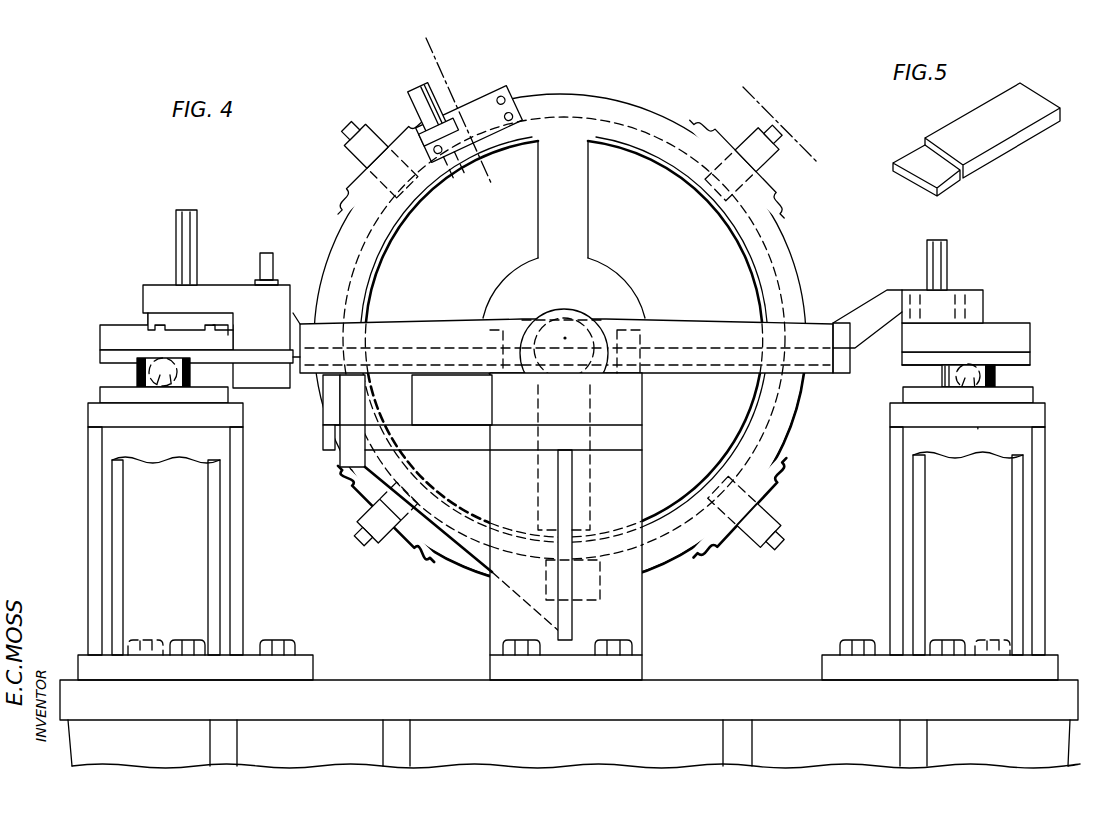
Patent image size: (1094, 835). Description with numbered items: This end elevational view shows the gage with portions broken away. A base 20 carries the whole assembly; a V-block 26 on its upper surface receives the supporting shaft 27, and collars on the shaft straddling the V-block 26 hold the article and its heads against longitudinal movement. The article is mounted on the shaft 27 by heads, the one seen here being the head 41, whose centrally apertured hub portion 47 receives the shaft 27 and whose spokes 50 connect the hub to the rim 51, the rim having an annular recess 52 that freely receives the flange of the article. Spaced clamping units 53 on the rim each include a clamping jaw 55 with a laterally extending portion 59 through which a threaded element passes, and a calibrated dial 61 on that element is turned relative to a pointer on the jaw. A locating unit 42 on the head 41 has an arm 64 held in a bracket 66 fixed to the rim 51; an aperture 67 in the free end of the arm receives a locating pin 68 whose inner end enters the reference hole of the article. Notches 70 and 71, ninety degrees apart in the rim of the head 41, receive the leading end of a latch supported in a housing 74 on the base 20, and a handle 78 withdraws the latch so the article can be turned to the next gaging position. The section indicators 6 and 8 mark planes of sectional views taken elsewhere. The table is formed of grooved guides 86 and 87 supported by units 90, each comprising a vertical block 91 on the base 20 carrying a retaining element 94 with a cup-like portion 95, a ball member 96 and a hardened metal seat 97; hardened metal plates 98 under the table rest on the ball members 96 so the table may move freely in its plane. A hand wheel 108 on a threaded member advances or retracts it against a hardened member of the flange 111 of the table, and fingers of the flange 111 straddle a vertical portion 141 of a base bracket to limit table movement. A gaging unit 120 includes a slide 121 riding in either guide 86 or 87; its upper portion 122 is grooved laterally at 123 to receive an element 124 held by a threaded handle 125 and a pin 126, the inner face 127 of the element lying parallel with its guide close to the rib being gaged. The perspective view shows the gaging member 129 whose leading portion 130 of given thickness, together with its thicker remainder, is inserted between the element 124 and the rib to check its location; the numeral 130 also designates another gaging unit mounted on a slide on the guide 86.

In FIG. 4, the section line 6- 6 is at (424, 41).
In FIG. 4, the section line 8- 8 is at (748, 92).
In FIG. 4, the base 20 is at (820, 758).
In FIG. 4, the V-block 26 is at (642, 398).
In FIG. 4, the supporting shaft 27 is at (568, 312).
In FIG. 4, the head 41 is at (660, 110).
In FIG. 4, the locating unit 42 is at (505, 78).
In FIG. 4, the hub portion 47 is at (615, 284).
In FIG. 4, the spokes 50 is at (589, 210).
In FIG. 4, the rim 51 is at (790, 262).
In FIG. 4, the annular recess 52 is at (786, 283).
In FIG. 4, the clamping unit 53 is at (354, 165).
In FIG. 4, the clamping jaw 55 is at (378, 175).
In FIG. 4, the laterally extending portion 59 is at (378, 138).
In FIG. 4, the calibrated dial 61 is at (356, 140).
In FIG. 4, the arm 64 is at (448, 112).
In FIG. 4, the bracket 66 is at (510, 90).
In FIG. 4, the aperture 67 is at (487, 157).
In FIG. 4, the locating pin 68 is at (462, 66).
In FIG. 4, the notch 70 is at (322, 400).
In FIG. 4, the notch 71 is at (640, 555).
In FIG. 4, the housing 74 is at (405, 408).
In FIG. 4, the handle 78 is at (348, 444).
In FIG. 4, the grooved guide 86 is at (222, 326).
In FIG. 4, the grooved guide 87 is at (100, 330).
In FIG. 4, the supporting unit 90 is at (84, 403).
In FIG. 4, the vertical block 91 is at (200, 484).
In FIG. 4, the retaining element 94 is at (100, 395).
In FIG. 4, the cup-like portion 95 is at (546, 411).
In FIG. 4, the ball member 96 is at (158, 362).
In FIG. 4, the hardened metal seat 97 is at (578, 411).
In FIG. 4, the hardened metal plate 98 is at (100, 358).
In FIG. 4, the hand wheel 108 is at (548, 328).
In FIG. 4, the flange 111 is at (458, 330).
In FIG. 4, the gaging unit 120 is at (1000, 272).
In FIG. 4, the slide 121 is at (175, 310).
In FIG. 4, the upper portion 122 is at (983, 308).
In FIG. 4, the lateral groove 123 is at (915, 300).
In FIG. 4, the element 124 is at (870, 312).
In FIG. 4, the threaded handle 125 is at (940, 258).
In FIG. 4, the pin 126 is at (958, 300).
In FIG. 4, the inner face 127 is at (850, 348).
In FIG. 5, the gaging member 129 is at (985, 150).
In FIG. 4, the leading portion 130 is at (226, 284).
In FIG. 5, the leading portion 130 is at (908, 158).
In FIG. 4, the vertical portion 141 is at (606, 398).